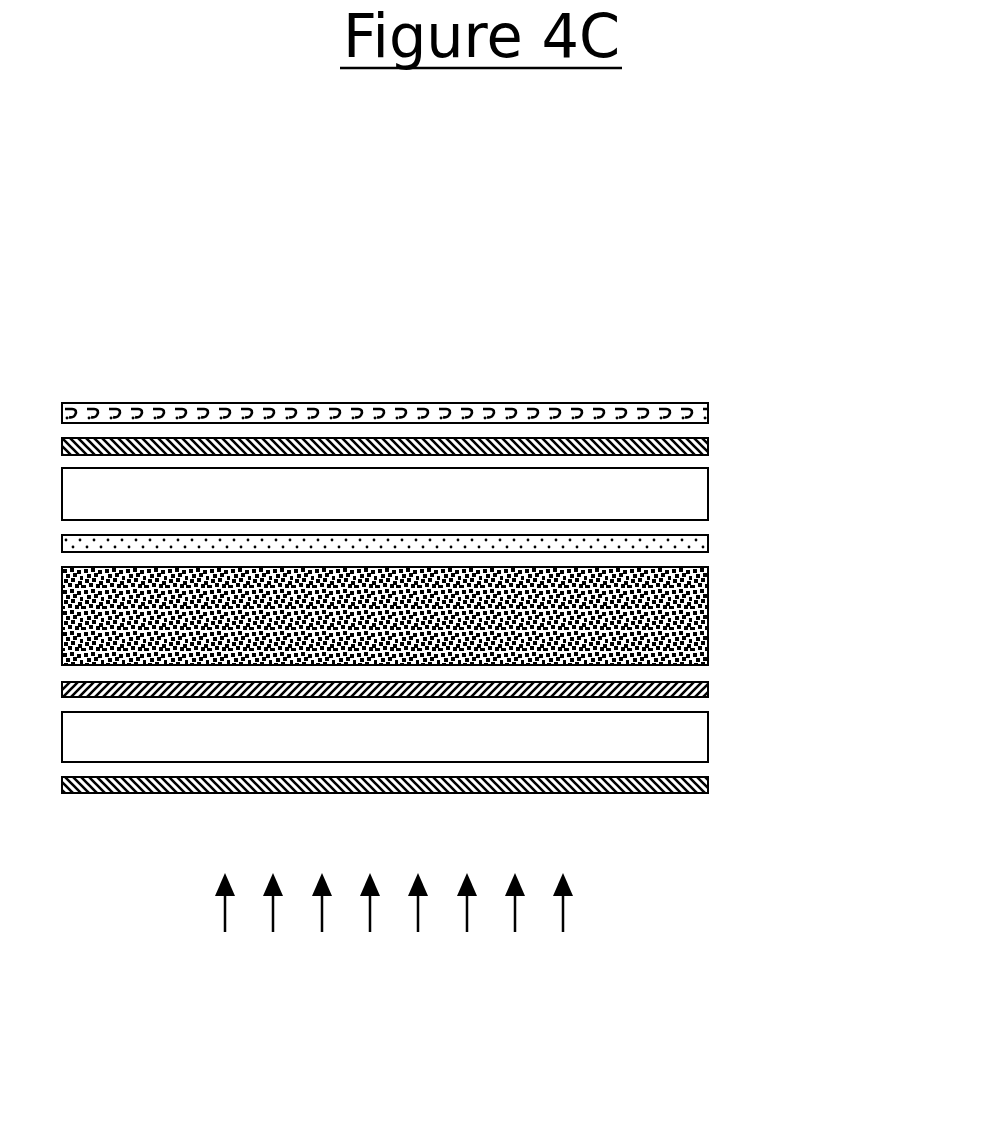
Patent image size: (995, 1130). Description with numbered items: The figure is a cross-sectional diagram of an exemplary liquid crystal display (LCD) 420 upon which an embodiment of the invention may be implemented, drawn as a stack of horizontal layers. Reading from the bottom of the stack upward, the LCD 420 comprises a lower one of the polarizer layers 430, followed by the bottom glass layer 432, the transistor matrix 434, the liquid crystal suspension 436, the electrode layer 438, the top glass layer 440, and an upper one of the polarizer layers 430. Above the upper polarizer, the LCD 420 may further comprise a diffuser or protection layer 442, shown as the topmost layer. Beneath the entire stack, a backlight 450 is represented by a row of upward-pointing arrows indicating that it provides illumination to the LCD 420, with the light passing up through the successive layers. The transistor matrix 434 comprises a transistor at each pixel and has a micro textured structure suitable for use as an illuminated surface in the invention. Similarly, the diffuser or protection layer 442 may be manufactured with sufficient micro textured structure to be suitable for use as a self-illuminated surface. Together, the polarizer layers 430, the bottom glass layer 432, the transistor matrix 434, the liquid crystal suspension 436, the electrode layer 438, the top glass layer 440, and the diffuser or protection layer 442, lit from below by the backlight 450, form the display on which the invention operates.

The liquid crystal display 420 is at (87, 193).
The polarizer layers 430 is at (727, 433).
The bottom glass layer 432 is at (728, 749).
The transistor matrix 434 is at (728, 701).
The liquid crystal suspension 436 is at (729, 625).
The electrode layer 438 is at (729, 552).
The top glass layer 440 is at (729, 488).
The diffuser or protection layer 442 is at (726, 397).
The backlight 450 is at (418, 1023).